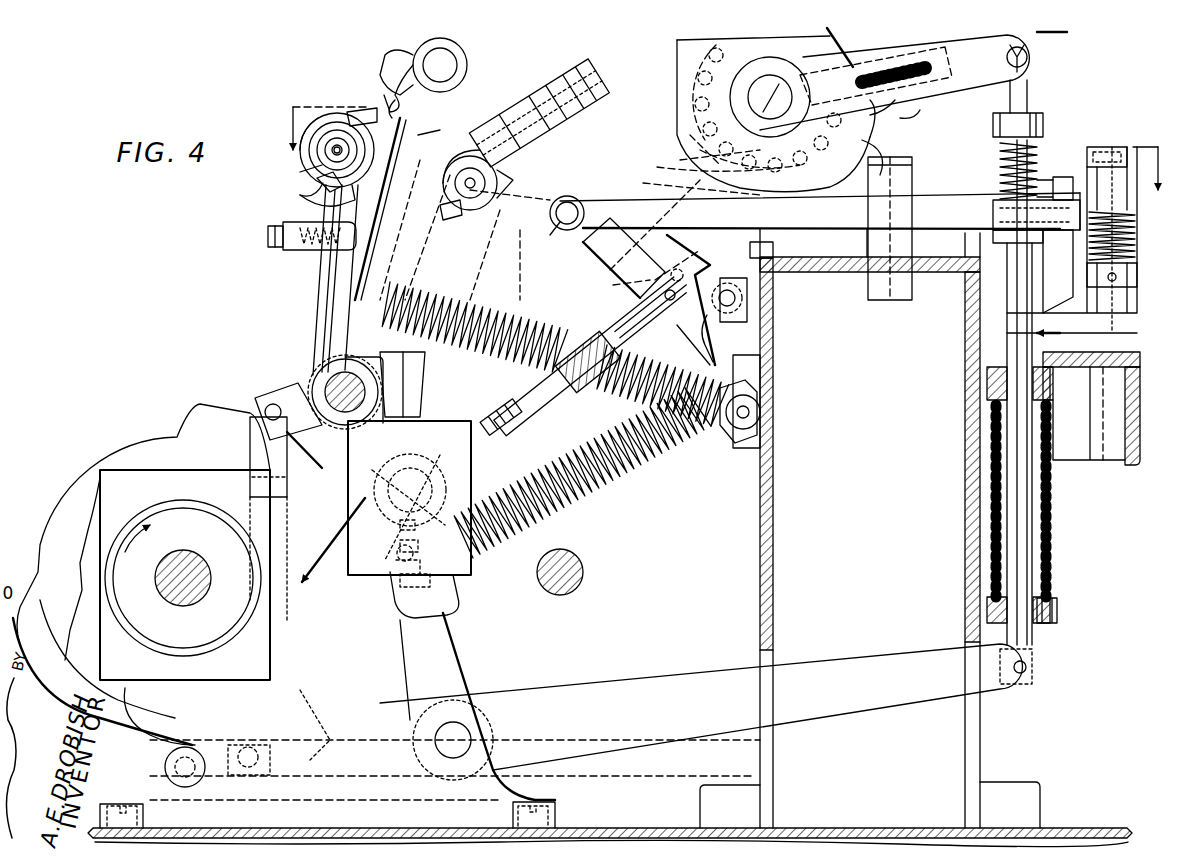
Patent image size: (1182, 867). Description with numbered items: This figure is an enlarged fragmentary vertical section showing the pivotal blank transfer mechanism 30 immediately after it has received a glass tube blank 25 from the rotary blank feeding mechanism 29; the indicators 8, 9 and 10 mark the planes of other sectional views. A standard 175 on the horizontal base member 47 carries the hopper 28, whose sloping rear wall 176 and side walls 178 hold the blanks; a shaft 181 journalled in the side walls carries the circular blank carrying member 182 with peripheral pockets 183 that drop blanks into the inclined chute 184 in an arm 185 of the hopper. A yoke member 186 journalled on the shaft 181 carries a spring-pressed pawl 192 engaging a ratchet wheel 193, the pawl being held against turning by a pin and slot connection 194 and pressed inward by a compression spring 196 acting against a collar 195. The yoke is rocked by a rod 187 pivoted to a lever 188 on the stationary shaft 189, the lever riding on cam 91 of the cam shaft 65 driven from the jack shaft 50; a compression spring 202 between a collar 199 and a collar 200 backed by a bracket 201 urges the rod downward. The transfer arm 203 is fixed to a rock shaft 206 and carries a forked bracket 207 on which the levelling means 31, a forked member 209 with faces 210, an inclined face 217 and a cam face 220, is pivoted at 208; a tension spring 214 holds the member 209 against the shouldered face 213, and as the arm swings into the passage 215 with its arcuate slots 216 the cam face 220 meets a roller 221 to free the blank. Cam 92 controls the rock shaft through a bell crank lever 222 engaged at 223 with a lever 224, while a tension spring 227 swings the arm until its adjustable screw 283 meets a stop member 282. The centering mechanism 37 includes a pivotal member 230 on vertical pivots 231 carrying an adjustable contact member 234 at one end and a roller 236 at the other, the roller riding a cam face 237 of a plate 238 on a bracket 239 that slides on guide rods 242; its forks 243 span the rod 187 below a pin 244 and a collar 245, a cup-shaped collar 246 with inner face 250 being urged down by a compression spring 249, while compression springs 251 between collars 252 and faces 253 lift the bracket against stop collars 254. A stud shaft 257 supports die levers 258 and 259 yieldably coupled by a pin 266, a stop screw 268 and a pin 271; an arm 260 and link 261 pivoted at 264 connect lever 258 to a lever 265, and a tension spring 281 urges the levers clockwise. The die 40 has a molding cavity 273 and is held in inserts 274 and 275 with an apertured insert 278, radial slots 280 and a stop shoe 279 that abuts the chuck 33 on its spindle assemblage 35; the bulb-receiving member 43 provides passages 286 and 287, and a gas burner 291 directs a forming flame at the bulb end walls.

The section line 8- 8 is at (1052, 193).
The section line 9- 9 is at (725, 148).
The section line 10- 10 is at (577, 314).
The blank 25 is at (510, 227).
The hopper 28 is at (1010, 48).
The rotary blank feeding mechanism 29 is at (693, 88).
The pivotal blank transfer mechanism 30 is at (578, 318).
The blank levelling means 31 is at (683, 225).
The chuck 33 is at (455, 182).
The spindle assemblage 35 is at (507, 180).
The centering mechanism 37 is at (557, 227).
The molding die 40 is at (300, 172).
The bulb-receiving member 43 is at (333, 290).
The horizontal base member 47 is at (580, 828).
The jack shaft 50 is at (583, 575).
The cam shaft 65 is at (182, 545).
The cam 91 is at (150, 733).
The cam 92 is at (140, 445).
The standard 175 is at (763, 537).
The rear wall 176 is at (920, 117).
The side walls 178 is at (680, 45).
The shaft 181 is at (763, 80).
The circular blank carrying member 182 is at (700, 113).
The blank-receiving pockets 183 is at (750, 160).
The inclined chute 184 is at (680, 160).
The arm 185 is at (657, 167).
The yoke member 186 is at (870, 137).
The rod 187 is at (1033, 98).
The lever 188 is at (863, 667).
The stationary shaft 189 is at (458, 727).
The spring-pressed pawl 192 is at (770, 97).
The ratchet wheel 193 is at (835, 62).
The pin and slot connection 194 is at (957, 85).
The collar 195 is at (883, 120).
The compression spring 196 is at (923, 100).
The collar 199 is at (1057, 600).
The collar 200 is at (1053, 368).
The bracket 201 is at (1135, 462).
The compression spring 202 is at (1050, 523).
The transfer arm 203 is at (490, 447).
The rock shaft 206 is at (437, 458).
The forked bracket 207 is at (677, 328).
The pivot 208 is at (672, 301).
The blank levelling and retaining member 209 is at (765, 240).
The faces 210 is at (700, 268).
The shouldered face 213 is at (613, 285).
The tension spring 214 is at (573, 382).
The passage 215 is at (643, 183).
The arcuate slots 216 is at (593, 253).
The inclined face 217 is at (697, 243).
The cam face 220 is at (712, 345).
The roller 221 is at (713, 328).
The bell crank lever 222 is at (452, 620).
The forked engagement 223 is at (400, 547).
The lever 224 is at (400, 523).
The tension spring 227 is at (653, 477).
The pivotal member 230 is at (933, 222).
The vertical pivots 231 is at (867, 222).
The adjustable contact member 234 is at (570, 207).
The rollers 236 is at (1073, 232).
The cam faces 237 is at (1037, 180).
The cam plate 238 is at (1062, 177).
The bracket 239 is at (1090, 160).
The guide rods 242 is at (1113, 153).
The forks 243 is at (1010, 317).
The pin 244 is at (912, 268).
The collar 245 is at (1040, 114).
The cup-shaped collar 246 is at (997, 226).
The compression spring 249 is at (1000, 155).
The annular inner face 250 is at (1000, 223).
The compression springs 251 is at (1087, 264).
The collars 252 is at (1092, 287).
The faces 253 is at (1127, 213).
The stop collars 254 is at (1147, 146).
The stud shaft 257 is at (336, 373).
The lever 258 is at (308, 330).
The lever 259 is at (313, 313).
The arm 260 is at (297, 384).
The link 261 is at (267, 437).
The pivot 264 is at (262, 757).
The lever 265 is at (272, 796).
The pin 266 is at (298, 220).
The adjustable stop screw 268 is at (270, 235).
The pin 271 is at (445, 213).
The molding cavity 273 is at (331, 146).
The outer ring-shaped insert 274 is at (347, 124).
The inner ring-shaped insert 275 is at (300, 195).
The apertured insert 278 is at (318, 118).
The stop member 279 is at (318, 163).
The radial slots 280 is at (333, 181).
The tension spring 281 is at (463, 307).
The stop member 282 is at (417, 390).
The adjustable screw 283 is at (488, 405).
The bulb receiving passage 286 is at (418, 135).
The passage 287 is at (502, 117).
The gas burner 291 is at (468, 43).